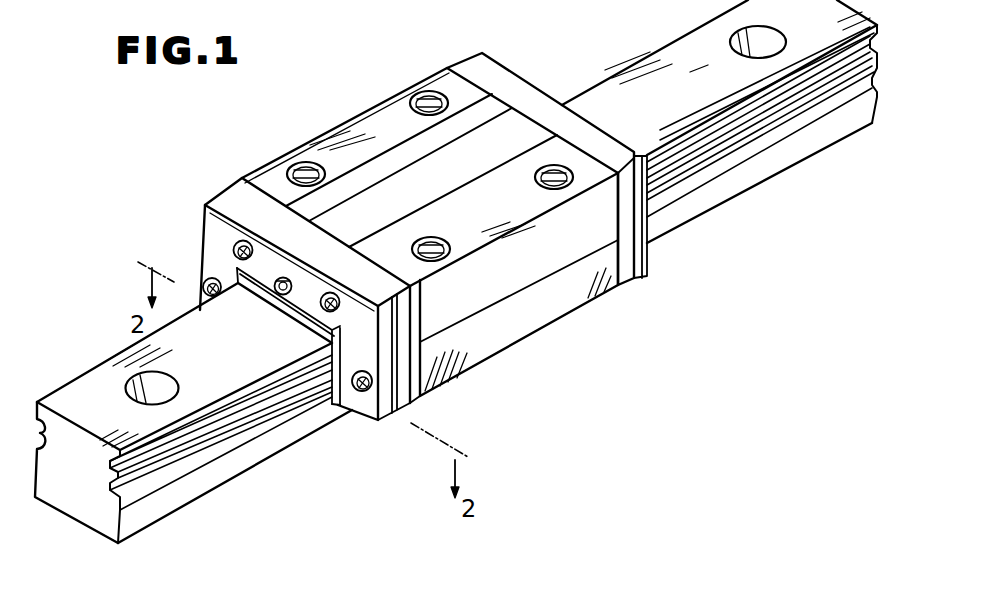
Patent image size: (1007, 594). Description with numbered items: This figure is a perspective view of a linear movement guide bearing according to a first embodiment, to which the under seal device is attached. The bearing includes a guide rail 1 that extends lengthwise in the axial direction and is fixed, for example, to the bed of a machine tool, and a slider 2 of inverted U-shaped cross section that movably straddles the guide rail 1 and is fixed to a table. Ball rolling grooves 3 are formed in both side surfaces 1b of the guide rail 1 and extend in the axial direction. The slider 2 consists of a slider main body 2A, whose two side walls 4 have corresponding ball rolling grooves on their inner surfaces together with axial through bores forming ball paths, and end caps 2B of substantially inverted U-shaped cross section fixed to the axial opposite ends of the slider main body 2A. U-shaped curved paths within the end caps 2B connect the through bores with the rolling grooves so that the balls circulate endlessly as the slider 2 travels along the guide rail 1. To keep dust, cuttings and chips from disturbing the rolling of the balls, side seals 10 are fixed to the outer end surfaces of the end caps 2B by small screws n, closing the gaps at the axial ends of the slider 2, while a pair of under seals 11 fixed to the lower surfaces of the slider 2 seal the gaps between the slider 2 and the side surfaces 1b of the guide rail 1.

The guide rail 1 is at (456, 279).
The side surfaces of the guide rail 1b is at (257, 428).
The slider 2 is at (422, 242).
The slider main body 2A is at (430, 216).
The end caps 2B is at (233, 204).
The ball rolling grooves 3 is at (160, 472).
The side walls 4 is at (520, 327).
The side seals 10 is at (370, 405).
The under seals 11 is at (356, 415).
The small screws n is at (360, 394).